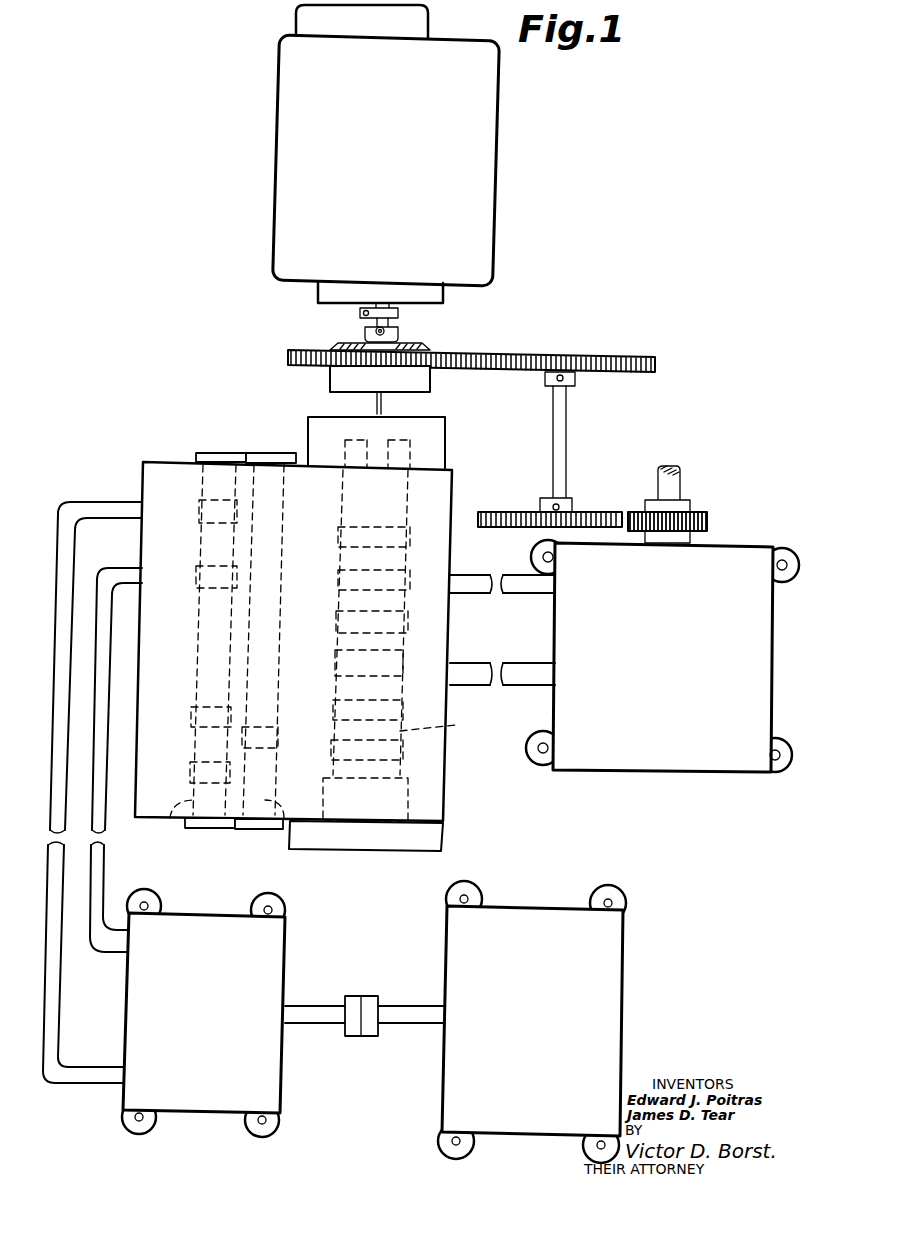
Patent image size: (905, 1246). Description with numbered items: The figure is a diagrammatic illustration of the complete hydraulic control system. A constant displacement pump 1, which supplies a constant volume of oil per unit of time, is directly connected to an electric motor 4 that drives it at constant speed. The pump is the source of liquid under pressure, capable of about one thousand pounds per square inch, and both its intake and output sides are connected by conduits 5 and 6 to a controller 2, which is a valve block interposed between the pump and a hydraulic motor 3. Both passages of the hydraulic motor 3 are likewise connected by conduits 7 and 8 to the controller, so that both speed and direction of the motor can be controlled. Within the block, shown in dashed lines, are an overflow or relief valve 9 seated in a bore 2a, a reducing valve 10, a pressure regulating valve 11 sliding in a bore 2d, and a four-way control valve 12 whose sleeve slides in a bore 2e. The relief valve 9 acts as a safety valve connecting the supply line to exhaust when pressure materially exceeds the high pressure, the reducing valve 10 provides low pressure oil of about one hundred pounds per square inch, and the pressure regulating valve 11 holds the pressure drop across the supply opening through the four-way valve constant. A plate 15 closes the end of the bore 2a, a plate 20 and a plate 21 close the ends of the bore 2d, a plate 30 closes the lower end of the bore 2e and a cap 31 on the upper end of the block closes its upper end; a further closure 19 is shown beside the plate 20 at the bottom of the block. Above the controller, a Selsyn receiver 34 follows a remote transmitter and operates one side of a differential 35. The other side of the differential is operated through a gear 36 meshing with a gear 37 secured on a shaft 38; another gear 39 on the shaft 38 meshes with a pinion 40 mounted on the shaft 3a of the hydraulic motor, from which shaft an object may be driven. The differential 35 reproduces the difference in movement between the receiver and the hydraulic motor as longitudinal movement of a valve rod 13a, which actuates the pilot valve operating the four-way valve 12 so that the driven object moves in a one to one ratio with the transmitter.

The pump 1 is at (193, 915).
The controller 2 is at (441, 758).
The bore 2a is at (188, 826).
The bore 2d is at (282, 832).
The bore 2e is at (441, 727).
The hydraulic motor 3 is at (668, 763).
The shaft of the hydraulic motor 3a is at (668, 476).
The electric motor 4 is at (537, 912).
The conduit 5 is at (55, 820).
The conduit 6 is at (105, 828).
The conduit 7 is at (496, 590).
The conduit 8 is at (508, 677).
The overflow or relief valve 9 is at (203, 610).
The reducing valve 10 is at (198, 745).
The pressure regulating valve 11 is at (265, 731).
The four-way control valve 12 is at (340, 650).
The valve rod 13a is at (378, 409).
The plate 15 is at (216, 462).
The cap 19 is at (208, 830).
The plate 20 is at (245, 835).
The plate 21 is at (270, 462).
The plate 30 is at (374, 850).
The cap 31 is at (438, 432).
The Selsyn receiver 34 is at (487, 150).
The differential 35 is at (398, 346).
The gear 36 is at (291, 352).
The gear 37 is at (612, 353).
The shaft 38 is at (553, 437).
The gear 39 is at (600, 508).
The pinion 40 is at (716, 518).